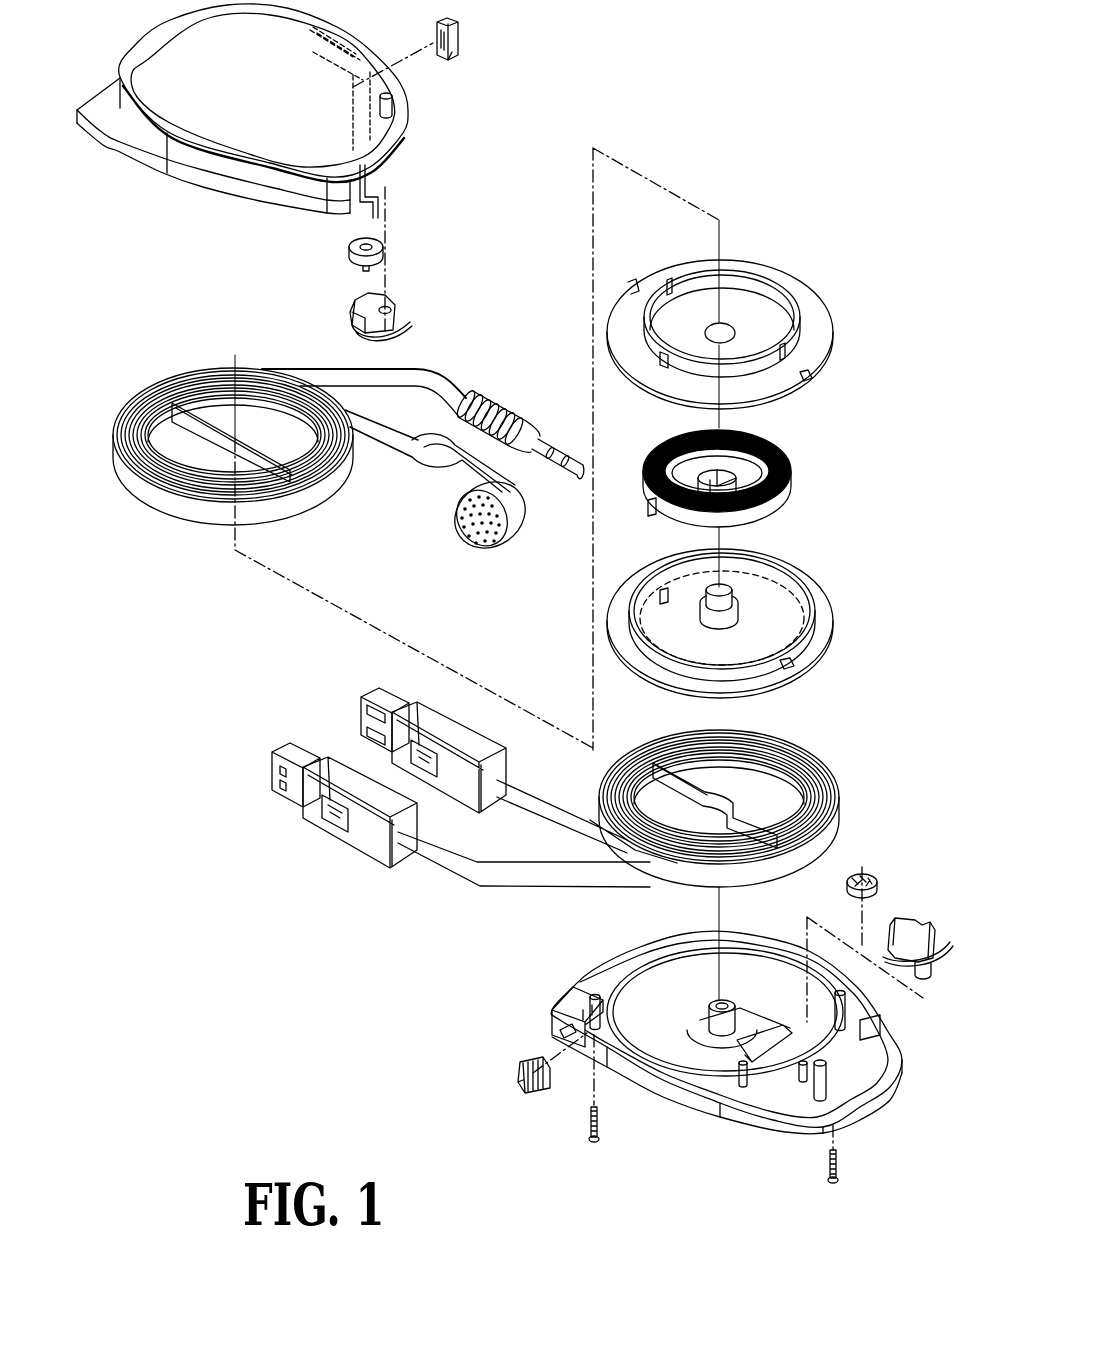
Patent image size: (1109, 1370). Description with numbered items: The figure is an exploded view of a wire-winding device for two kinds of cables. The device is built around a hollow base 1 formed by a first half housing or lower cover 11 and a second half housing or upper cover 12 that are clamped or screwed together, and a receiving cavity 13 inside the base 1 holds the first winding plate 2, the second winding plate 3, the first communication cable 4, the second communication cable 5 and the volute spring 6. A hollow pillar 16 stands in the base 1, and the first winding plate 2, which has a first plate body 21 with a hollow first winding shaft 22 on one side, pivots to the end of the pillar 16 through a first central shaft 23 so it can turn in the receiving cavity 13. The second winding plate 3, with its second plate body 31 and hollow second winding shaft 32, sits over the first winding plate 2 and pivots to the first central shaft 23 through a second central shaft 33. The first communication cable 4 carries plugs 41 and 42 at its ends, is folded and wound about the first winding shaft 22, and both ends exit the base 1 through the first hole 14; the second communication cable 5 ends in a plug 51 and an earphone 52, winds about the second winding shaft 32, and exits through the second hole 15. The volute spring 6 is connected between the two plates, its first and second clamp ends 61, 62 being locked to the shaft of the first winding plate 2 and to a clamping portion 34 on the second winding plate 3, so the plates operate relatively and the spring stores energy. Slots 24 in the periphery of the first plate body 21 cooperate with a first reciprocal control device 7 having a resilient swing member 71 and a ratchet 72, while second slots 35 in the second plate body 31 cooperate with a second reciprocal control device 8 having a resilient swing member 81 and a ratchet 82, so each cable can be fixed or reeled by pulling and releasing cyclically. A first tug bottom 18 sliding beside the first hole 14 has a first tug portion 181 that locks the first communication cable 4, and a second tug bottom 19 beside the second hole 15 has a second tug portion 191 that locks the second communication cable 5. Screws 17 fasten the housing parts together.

The base 1 is at (683, 1073).
The first half housing 11 is at (878, 1103).
The second half housing 12 is at (187, 182).
The receiving cavity 13 is at (647, 990).
The first hole 14 is at (563, 1002).
The second hole 15 is at (393, 157).
The pillar 16 is at (720, 1035).
The screws 17 is at (587, 1120).
The first tug bottom 18 is at (528, 1087).
The first tug portion 181 is at (545, 1048).
The second tug bottom 19 is at (462, 30).
The second tug portion 191 is at (452, 57).
The first winding plate 2 is at (741, 626).
The first plate body 21 is at (820, 638).
The first winding shaft 22 is at (763, 673).
The first central shaft 23 is at (722, 588).
The slots 24 is at (637, 573).
The second winding plate 3 is at (728, 298).
The second plate body 31 is at (813, 303).
The second winding shaft 32 is at (777, 285).
The second central shaft 33 is at (740, 343).
The clamping portion 34 is at (655, 373).
The second slots 35 is at (808, 380).
The first communication cable 4 is at (820, 762).
The plug 41 is at (367, 837).
The plug 42 is at (420, 712).
The second communication cable 5 is at (348, 466).
The plug 51 is at (518, 408).
The earphone 52 is at (507, 533).
The volute spring 6 is at (745, 478).
The first clamp end 61 is at (710, 475).
The second clamp end 62 is at (650, 507).
The first reciprocal control device 7 is at (900, 862).
The resilient swing member 71 is at (915, 933).
The ratchet 72 is at (863, 867).
The second reciprocal control device 8 is at (449, 253).
The resilient swing member 81 is at (390, 323).
The ratchet 82 is at (373, 238).